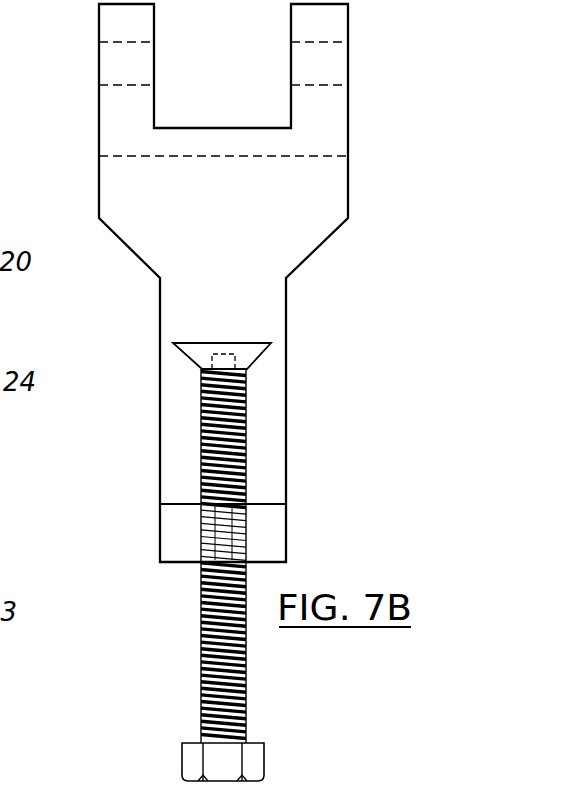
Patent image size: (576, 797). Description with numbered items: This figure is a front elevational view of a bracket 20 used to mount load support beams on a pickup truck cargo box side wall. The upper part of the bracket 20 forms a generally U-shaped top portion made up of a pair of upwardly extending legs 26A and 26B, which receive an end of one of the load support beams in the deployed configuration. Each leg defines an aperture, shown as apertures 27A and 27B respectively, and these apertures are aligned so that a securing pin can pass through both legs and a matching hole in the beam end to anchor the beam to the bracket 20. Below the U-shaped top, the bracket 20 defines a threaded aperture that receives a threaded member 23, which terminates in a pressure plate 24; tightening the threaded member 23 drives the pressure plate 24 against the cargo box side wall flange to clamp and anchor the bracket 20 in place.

The bracket 20 is at (343, 270).
The threaded member 23 is at (208, 651).
The pressure plate 24 is at (248, 353).
The upwardly extending leg 26A is at (143, 30).
The upwardly extending leg 26B is at (339, 25).
The aperture 27A is at (101, 69).
The aperture 27B is at (335, 70).